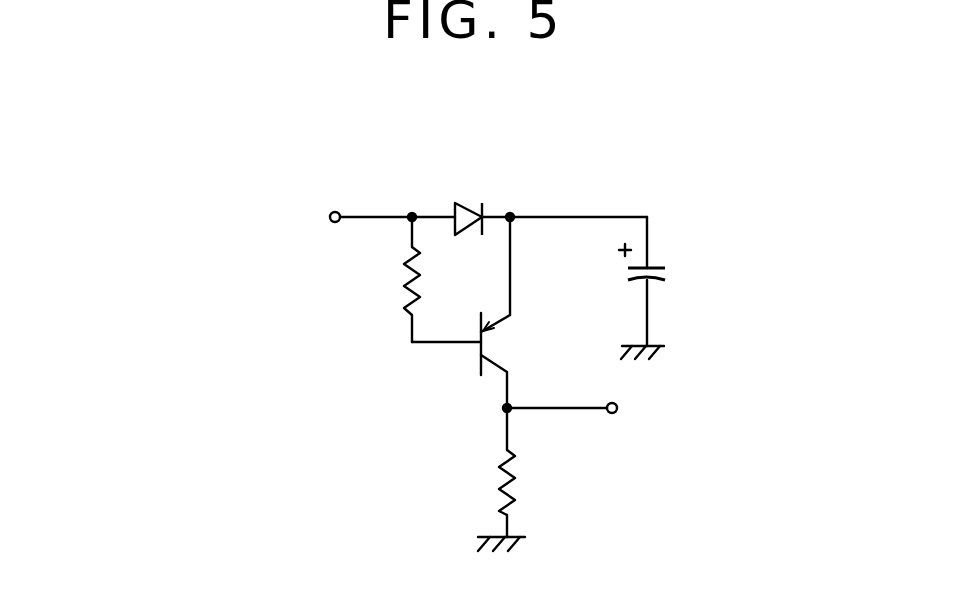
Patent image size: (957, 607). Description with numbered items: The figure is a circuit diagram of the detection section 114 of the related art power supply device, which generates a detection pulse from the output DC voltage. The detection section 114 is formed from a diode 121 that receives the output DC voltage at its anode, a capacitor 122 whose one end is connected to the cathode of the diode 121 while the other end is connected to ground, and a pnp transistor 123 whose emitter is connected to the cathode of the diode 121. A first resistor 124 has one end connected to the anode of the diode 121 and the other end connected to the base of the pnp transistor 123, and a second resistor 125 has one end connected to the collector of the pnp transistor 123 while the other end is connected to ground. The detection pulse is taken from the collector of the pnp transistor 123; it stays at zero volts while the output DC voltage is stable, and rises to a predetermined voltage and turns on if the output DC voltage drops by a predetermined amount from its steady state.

The detection section 114 is at (642, 117).
The diode 121 is at (472, 203).
The capacitor 122 is at (668, 275).
The pnp transistor 123 is at (509, 341).
The first resistor 124 is at (404, 277).
The second resistor 125 is at (500, 474).